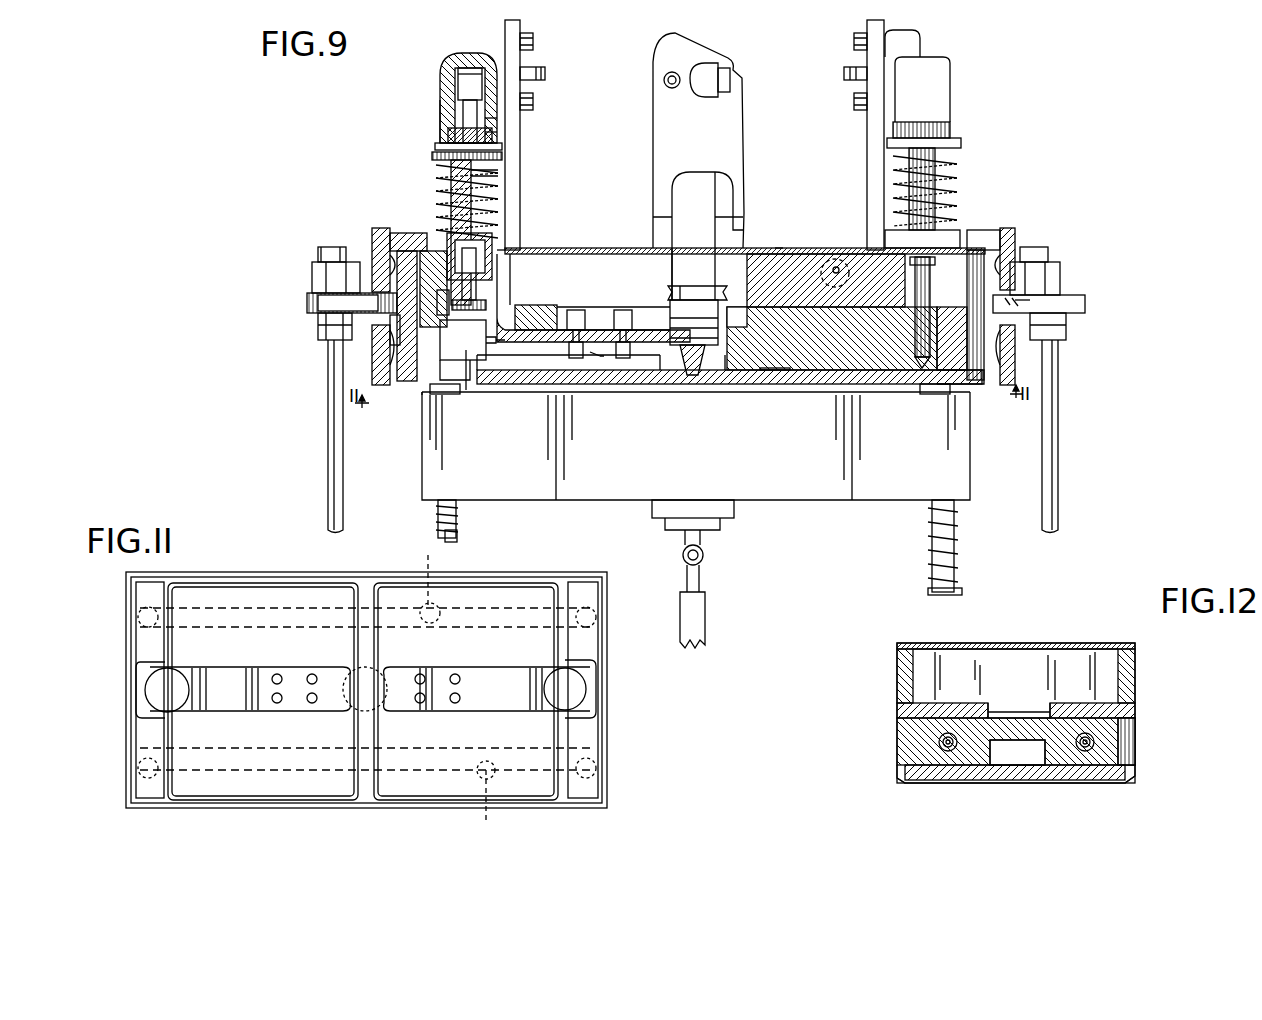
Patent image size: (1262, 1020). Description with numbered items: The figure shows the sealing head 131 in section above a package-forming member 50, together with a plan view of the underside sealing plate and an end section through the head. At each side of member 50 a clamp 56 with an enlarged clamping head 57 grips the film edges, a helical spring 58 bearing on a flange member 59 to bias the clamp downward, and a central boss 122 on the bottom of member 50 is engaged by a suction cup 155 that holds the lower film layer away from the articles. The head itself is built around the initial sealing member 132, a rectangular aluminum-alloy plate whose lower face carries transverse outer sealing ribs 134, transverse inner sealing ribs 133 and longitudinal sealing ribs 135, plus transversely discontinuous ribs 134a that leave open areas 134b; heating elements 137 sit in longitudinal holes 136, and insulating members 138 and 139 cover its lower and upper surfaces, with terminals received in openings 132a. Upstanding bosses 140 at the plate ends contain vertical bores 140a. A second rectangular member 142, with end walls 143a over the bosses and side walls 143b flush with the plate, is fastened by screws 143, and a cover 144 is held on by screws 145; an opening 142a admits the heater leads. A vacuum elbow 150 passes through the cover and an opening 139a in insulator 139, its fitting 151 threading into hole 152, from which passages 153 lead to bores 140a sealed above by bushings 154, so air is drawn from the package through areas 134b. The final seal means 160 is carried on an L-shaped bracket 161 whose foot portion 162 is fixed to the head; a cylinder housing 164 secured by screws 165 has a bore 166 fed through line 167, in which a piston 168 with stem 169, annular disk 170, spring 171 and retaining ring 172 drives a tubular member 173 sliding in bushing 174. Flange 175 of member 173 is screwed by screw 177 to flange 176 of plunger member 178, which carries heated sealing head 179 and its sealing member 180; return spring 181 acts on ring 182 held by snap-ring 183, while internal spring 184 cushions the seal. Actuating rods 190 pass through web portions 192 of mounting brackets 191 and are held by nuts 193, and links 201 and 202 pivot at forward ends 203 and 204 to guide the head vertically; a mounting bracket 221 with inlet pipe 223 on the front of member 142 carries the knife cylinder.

In FIG. 9, the member 50 is at (606, 500).
In FIG. 9, the clamp 56 is at (458, 520).
In FIG. 9, the clamping head 57 is at (450, 394).
In FIG. 9, the helical spring 58 is at (438, 520).
In FIG. 9, the flange member 59 is at (928, 592).
In FIG. 9, the central boss 122 is at (734, 512).
In FIG. 9, the sealing head 131 is at (990, 188).
In FIG. 9, the initial sealing member 132 is at (966, 384).
In FIG. 12, the initial sealing member 132 is at (1145, 737).
In FIG. 11, the opening 132a is at (295, 697).
In FIG. 9, the transverse inner sealing rib 133 is at (688, 377).
In FIG. 11, the transverse inner sealing rib 133 is at (362, 628).
In FIG. 9, the transverse outer sealing rib 134 is at (422, 394).
In FIG. 11, the transverse outer sealing rib 134 is at (131, 706).
In FIG. 9, the transversely discontinuous sealing rib 134a is at (905, 384).
In FIG. 11, the transversely discontinuous sealing rib 134a is at (172, 624).
In FIG. 11, the open area 134b is at (160, 692).
In FIG. 11, the longitudinal sealing rib 135 is at (270, 572).
In FIG. 12, the longitudinal sealing rib 135 is at (900, 783).
In FIG. 11, the longitudinally extending hole 136 is at (492, 822).
In FIG. 12, the longitudinally extending hole 136 is at (945, 752).
In FIG. 12, the heating element 137 is at (950, 752).
In FIG. 9, the insulating member 138 is at (626, 384).
In FIG. 12, the insulating member 138 is at (990, 780).
In FIG. 9, the insulating member 139 is at (812, 302).
In FIG. 12, the insulating member 139 is at (897, 718).
In FIG. 9, the opening 139a is at (563, 309).
In FIG. 12, the opening 139a is at (1040, 712).
In FIG. 9, the upstanding boss 140 is at (518, 292).
In FIG. 9, the vertical bore 140a is at (503, 307).
In FIG. 9, the second rectangular member 142 is at (975, 246).
In FIG. 12, the second rectangular member 142 is at (1135, 686).
In FIG. 9, the opening 142a is at (840, 259).
In FIG. 9, the screw 143 is at (915, 287).
In FIG. 9, the end wall 143a is at (428, 225).
In FIG. 12, the side wall 143b is at (897, 670).
In FIG. 9, the cover 144 is at (568, 248).
In FIG. 12, the cover 144 is at (1118, 618).
In FIG. 9, the screw 145 is at (785, 248).
In FIG. 9, the elbow 150 is at (733, 187).
In FIG. 9, the fitting 151 is at (668, 292).
In FIG. 9, the internally threaded hole 152 is at (712, 345).
In FIG. 11, the internally threaded hole 152 is at (395, 682).
In FIG. 9, the passage 153 is at (567, 354).
In FIG. 11, the passage 153 is at (252, 678).
In FIG. 12, the passage 153 is at (1030, 765).
In FIG. 9, the bushing 154 is at (515, 248).
In FIG. 9, the suction cup 155 is at (708, 537).
In FIG. 9, the final seal means 160 is at (432, 104).
In FIG. 9, the L-shaped bracket 161 is at (520, 156).
In FIG. 9, the foot portion 162 is at (950, 248).
In FIG. 9, the cylinder housing 164 is at (480, 46).
In FIG. 9, the screw 165 is at (533, 40).
In FIG. 9, the bore 166 is at (462, 61).
In FIG. 9, the line 167 is at (545, 71).
In FIG. 9, the piston 168 is at (458, 91).
In FIG. 9, the stem 169 is at (490, 121).
In FIG. 9, the annular disk 170 is at (492, 136).
In FIG. 9, the spring 171 is at (463, 119).
In FIG. 9, the retaining ring 172 is at (448, 137).
In FIG. 9, the tubular member 173 is at (498, 180).
In FIG. 9, the tubular bushing 174 is at (451, 209).
In FIG. 9, the flange 175 is at (405, 302).
In FIG. 9, the flange 176 is at (390, 332).
In FIG. 9, the screw 177 is at (437, 304).
In FIG. 9, the plunger member 178 is at (447, 290).
In FIG. 9, the sealing head 179 is at (474, 354).
In FIG. 9, the sealing member 180 is at (470, 382).
In FIG. 9, the return spring 181 is at (436, 192).
In FIG. 9, the cup-like ring 182 is at (432, 158).
In FIG. 9, the snap-ring 183 is at (435, 148).
In FIG. 9, the spring 184 is at (492, 240).
In FIG. 9, the actuating rod 190 is at (328, 440).
In FIG. 9, the mounting bracket 191 is at (1018, 246).
In FIG. 9, the web portion 192 is at (307, 306).
In FIG. 9, the nut 193 is at (318, 257).
In FIG. 9, the link 201 is at (374, 257).
In FIG. 9, the link 202 is at (372, 374).
In FIG. 9, the forward pivot end 203 is at (372, 264).
In FIG. 9, the forward pivot end 204 is at (372, 352).
In FIG. 9, the mounting bracket 221 is at (653, 170).
In FIG. 9, the inlet pipe 223 is at (664, 84).